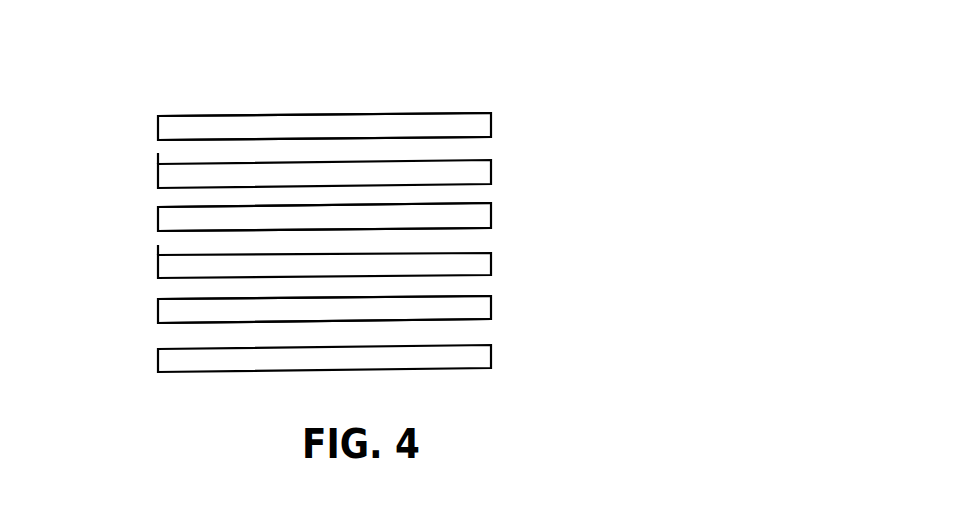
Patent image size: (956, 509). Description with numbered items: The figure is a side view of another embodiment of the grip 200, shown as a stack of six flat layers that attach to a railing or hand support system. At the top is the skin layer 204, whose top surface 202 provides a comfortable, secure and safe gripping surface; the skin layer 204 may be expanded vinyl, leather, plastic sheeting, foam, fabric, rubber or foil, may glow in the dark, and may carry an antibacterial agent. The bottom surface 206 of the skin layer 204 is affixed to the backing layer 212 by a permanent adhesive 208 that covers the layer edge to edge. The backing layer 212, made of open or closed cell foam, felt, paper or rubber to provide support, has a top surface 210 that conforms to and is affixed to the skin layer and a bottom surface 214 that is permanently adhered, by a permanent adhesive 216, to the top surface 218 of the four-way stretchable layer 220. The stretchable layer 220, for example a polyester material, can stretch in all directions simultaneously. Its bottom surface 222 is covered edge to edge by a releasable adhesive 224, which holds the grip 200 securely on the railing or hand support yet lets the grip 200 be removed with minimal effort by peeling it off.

The grip 200 is at (418, 49).
The top surface of skin layer 202 is at (376, 95).
The skin layer 204 is at (485, 128).
The bottom surface of skin layer 206 is at (370, 145).
The permanent adhesive 208 is at (167, 178).
The top surface of backing layer 210 is at (388, 185).
The backing layer 212 is at (478, 213).
The bottom surface of backing layer 214 is at (391, 244).
The permanent adhesive 216 is at (168, 270).
The top surface of 4-way stretchable material 218 is at (389, 279).
The 4-way stretchable layer 220 is at (478, 305).
The bottom surface of 4-way stretchable layer 222 is at (391, 337).
The releasable adhesive 224 is at (172, 360).